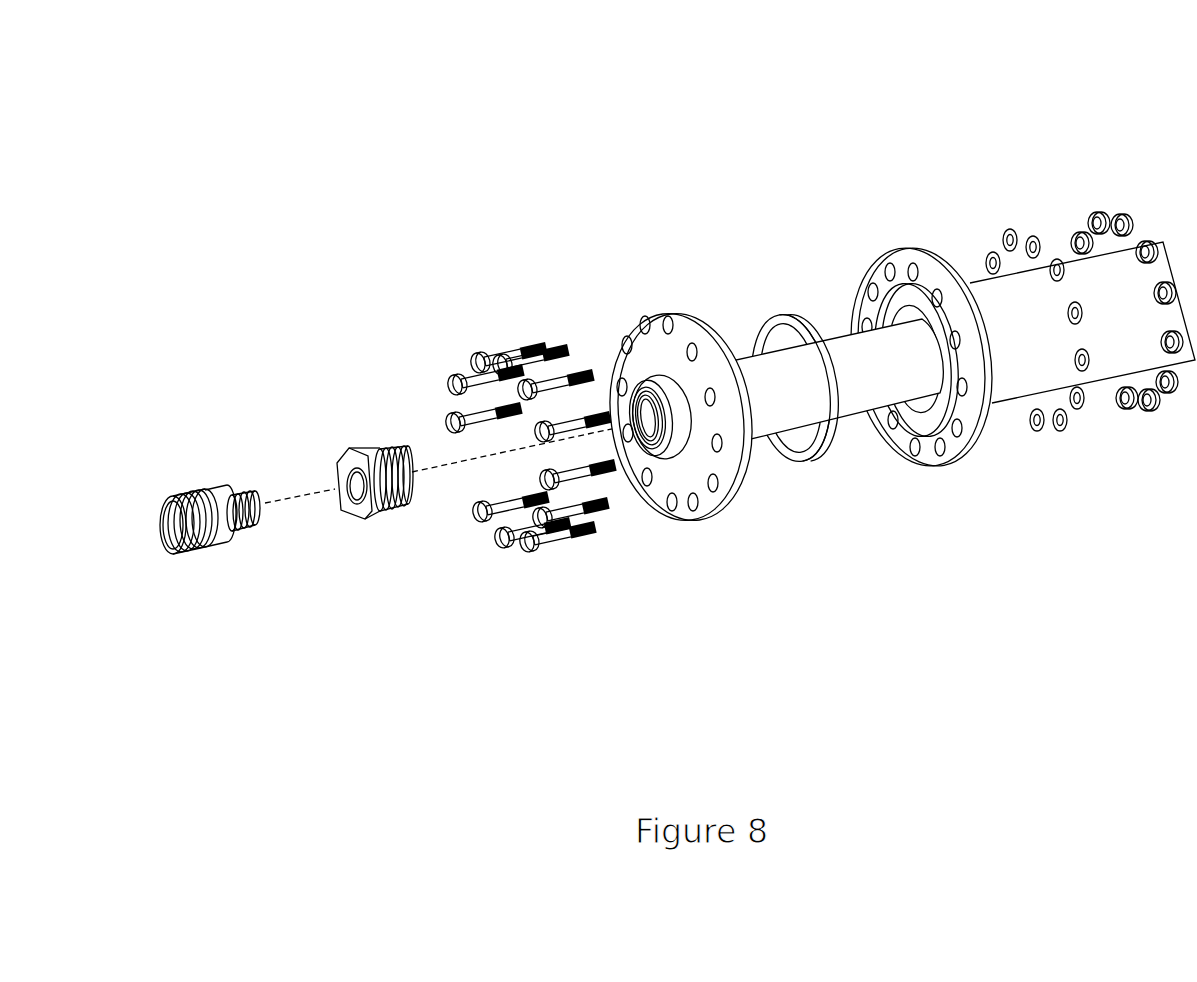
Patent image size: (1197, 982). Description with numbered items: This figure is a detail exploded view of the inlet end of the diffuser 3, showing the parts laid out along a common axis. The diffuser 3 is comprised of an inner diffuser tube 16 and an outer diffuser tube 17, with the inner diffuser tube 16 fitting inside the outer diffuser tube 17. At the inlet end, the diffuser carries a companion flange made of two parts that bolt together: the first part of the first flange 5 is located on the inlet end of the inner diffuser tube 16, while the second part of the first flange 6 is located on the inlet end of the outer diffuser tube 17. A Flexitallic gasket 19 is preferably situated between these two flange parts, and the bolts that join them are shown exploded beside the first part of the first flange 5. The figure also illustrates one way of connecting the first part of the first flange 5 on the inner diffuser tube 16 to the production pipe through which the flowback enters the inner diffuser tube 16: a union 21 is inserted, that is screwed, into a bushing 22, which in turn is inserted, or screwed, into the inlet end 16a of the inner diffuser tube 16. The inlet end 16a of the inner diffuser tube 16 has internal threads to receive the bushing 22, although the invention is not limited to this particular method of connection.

The diffuser 3 is at (1078, 182).
The first part of first flange 5 is at (677, 310).
The second part of first flange 6 is at (932, 257).
The inner diffuser tube 16 is at (843, 397).
The inlet end of inner diffuser tube 16a is at (680, 435).
The outer diffuser tube 17 is at (1005, 350).
The Flexitallic gasket 19 is at (858, 384).
The union 21 is at (200, 502).
The bushing 22 is at (363, 510).